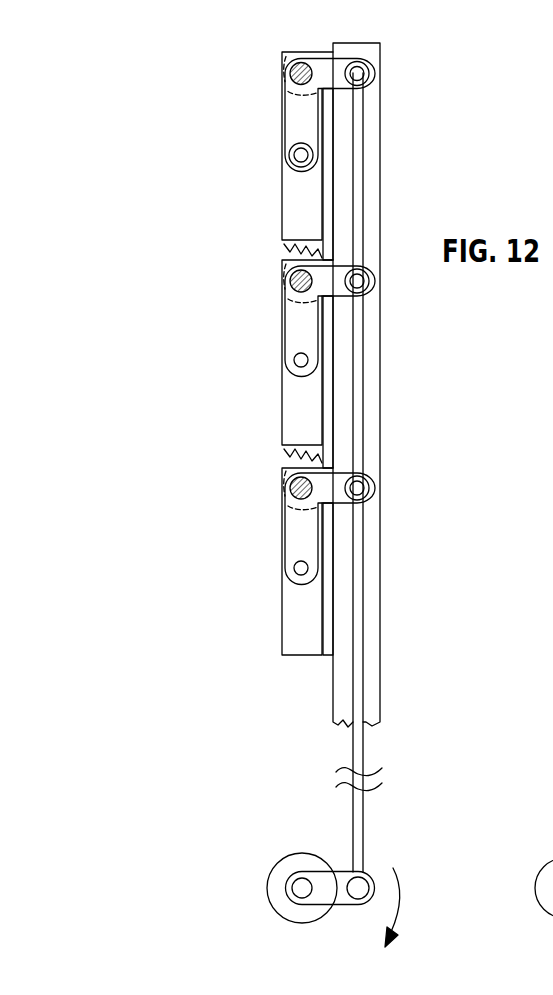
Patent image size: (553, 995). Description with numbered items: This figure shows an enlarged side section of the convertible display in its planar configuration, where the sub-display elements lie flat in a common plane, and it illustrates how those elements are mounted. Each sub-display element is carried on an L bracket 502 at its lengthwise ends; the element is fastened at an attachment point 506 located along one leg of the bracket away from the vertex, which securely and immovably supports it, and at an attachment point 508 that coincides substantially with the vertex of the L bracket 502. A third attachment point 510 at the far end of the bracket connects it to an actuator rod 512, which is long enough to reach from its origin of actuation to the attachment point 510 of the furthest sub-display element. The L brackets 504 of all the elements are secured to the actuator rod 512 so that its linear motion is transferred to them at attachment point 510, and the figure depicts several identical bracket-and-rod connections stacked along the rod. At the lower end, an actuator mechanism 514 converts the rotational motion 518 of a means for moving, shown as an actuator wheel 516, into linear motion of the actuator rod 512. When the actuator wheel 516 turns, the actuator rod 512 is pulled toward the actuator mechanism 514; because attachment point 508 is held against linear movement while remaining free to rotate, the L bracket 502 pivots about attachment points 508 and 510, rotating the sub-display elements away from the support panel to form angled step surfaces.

The L bracket 502 is at (296, 531).
The L bracket 504 is at (294, 628).
The attachment point 506 is at (293, 358).
The attachment point 508 is at (292, 275).
The attachment point 510 is at (369, 488).
The actuator rod 512 is at (362, 607).
The actuator mechanism 514 is at (282, 863).
The actuator wheel 516 is at (259, 876).
The rotational motion 518 is at (398, 890).